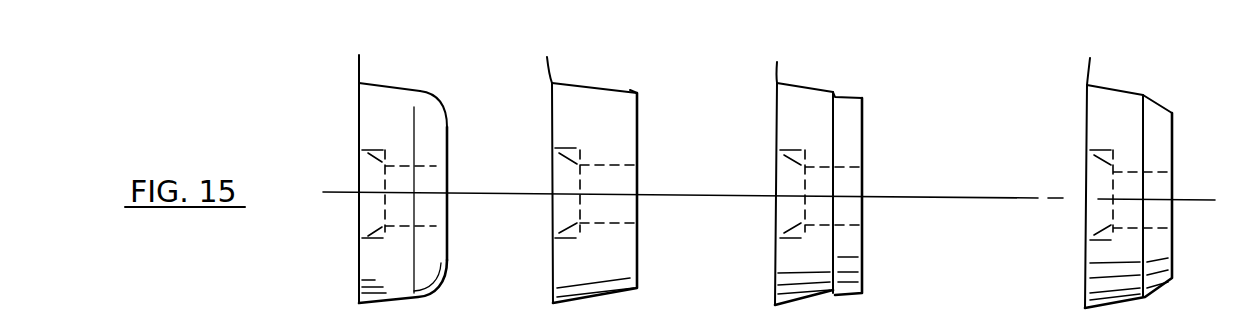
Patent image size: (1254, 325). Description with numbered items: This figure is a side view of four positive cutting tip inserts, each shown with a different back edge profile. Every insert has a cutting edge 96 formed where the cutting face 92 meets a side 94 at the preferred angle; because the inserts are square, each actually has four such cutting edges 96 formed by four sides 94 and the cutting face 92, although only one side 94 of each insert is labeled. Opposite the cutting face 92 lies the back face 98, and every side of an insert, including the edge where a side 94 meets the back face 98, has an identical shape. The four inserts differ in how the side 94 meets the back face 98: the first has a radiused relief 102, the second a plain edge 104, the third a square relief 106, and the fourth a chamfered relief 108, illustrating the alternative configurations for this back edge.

The cutting face 92 is at (358, 105).
The side 94 is at (388, 83).
The cutting edge 96 is at (739, 57).
The back face 98 is at (447, 127).
The radiused relief 102 is at (433, 97).
The edge 104 is at (637, 93).
The square relief 106 is at (848, 97).
The chamfered relief 108 is at (1165, 104).